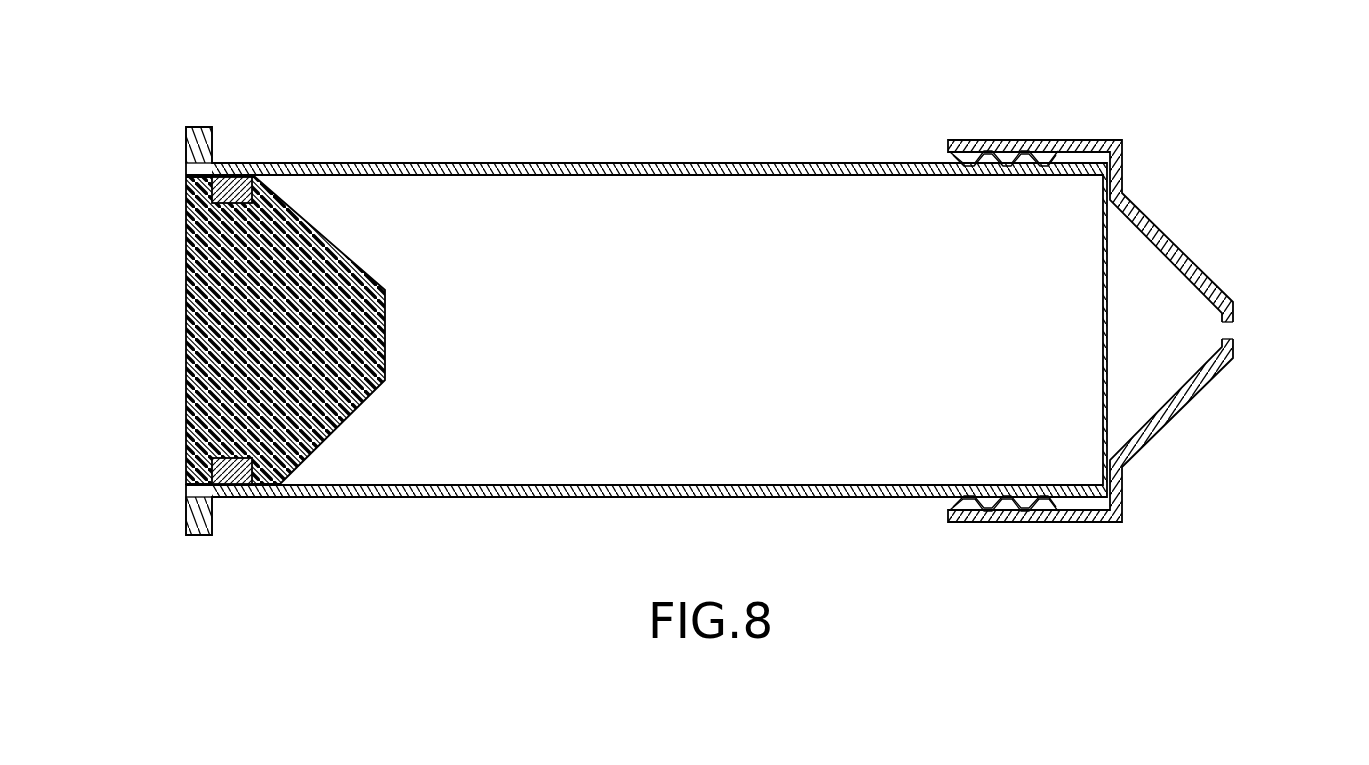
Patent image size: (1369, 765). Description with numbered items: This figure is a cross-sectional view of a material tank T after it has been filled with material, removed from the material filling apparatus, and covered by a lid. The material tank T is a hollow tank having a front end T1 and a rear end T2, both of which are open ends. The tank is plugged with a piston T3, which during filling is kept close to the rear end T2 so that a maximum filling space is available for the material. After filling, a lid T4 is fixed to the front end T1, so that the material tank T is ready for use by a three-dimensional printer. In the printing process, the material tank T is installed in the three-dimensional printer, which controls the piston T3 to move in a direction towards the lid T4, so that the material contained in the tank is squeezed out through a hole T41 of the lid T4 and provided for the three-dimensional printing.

The material tank T is at (689, 114).
The front end T1 is at (1108, 397).
The rear end T2 is at (186, 141).
The piston T3 is at (328, 243).
The lid T4 is at (1178, 253).
The hole T41 is at (1232, 332).